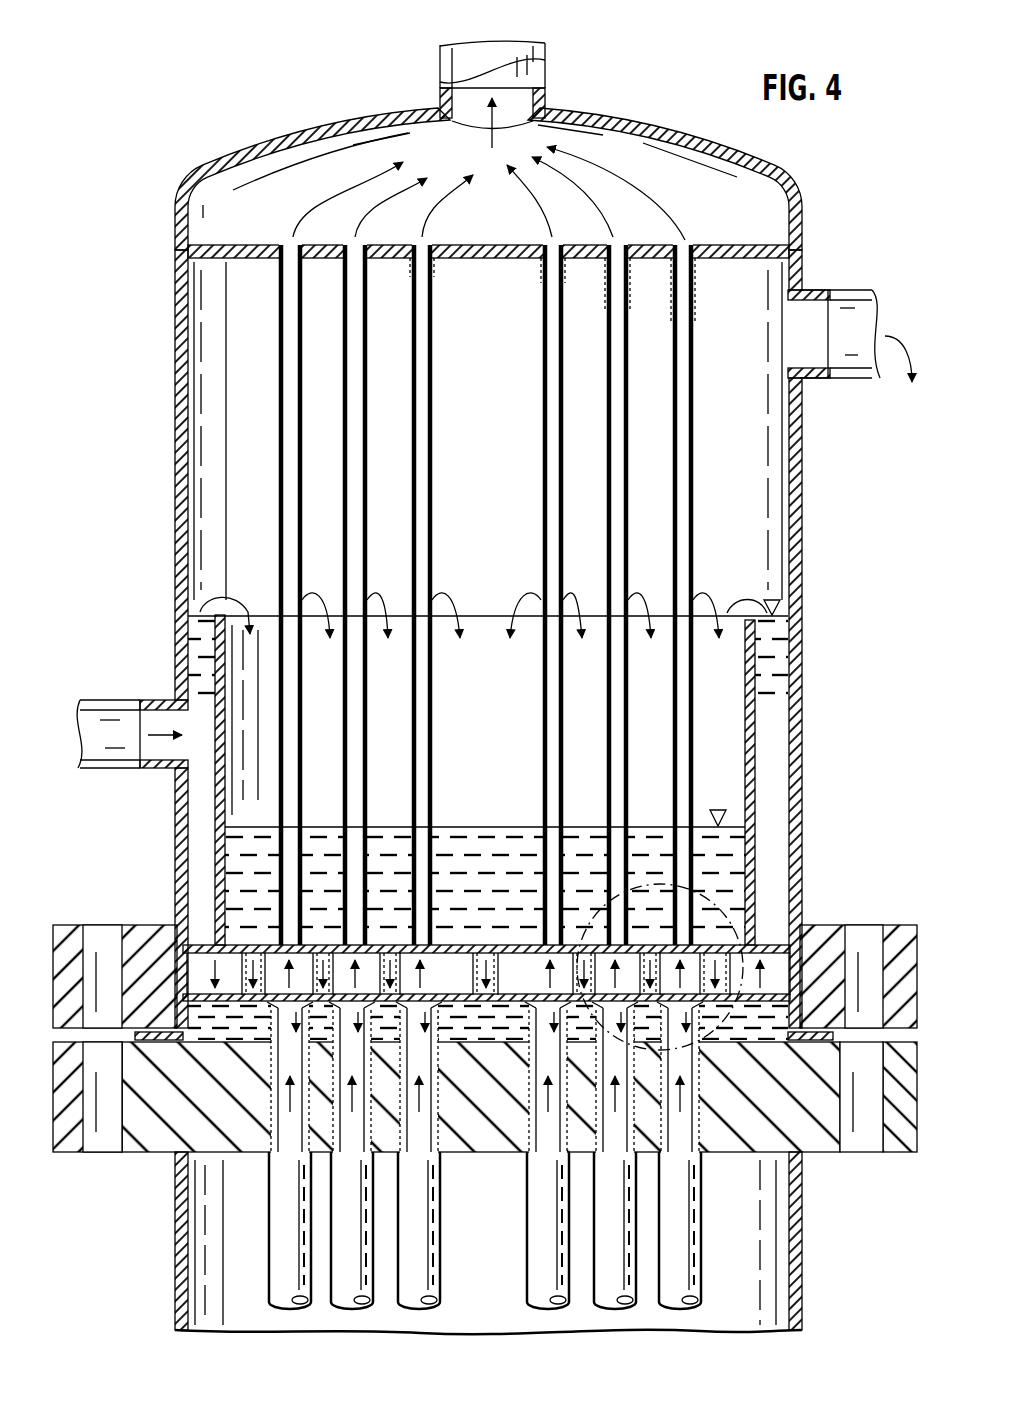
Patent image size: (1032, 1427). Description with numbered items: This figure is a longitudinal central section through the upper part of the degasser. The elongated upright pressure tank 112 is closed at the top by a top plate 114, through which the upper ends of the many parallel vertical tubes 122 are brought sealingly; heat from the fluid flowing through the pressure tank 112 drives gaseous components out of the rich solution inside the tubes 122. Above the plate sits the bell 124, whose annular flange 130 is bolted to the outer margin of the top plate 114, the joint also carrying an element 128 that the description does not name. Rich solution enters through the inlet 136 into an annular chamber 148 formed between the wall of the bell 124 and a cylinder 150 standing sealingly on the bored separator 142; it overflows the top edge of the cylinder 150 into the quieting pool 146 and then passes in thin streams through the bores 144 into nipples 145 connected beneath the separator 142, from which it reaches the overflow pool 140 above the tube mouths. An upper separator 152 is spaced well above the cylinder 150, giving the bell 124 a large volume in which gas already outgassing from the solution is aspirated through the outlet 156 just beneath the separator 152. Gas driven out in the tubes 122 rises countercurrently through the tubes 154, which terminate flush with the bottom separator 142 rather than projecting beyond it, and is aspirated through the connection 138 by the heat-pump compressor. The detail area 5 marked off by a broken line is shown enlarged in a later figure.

The detail area of FIG. 5 is at (796, 910).
The pressure tank 112 is at (803, 1262).
The top plate 114 is at (822, 1153).
The tubes 122 is at (275, 1195).
The bell 124 is at (176, 418).
The gasket 128 is at (160, 1040).
The annular flange 130 is at (815, 920).
The inlet 136 is at (140, 700).
The connection 138 is at (440, 70).
The overflow pool 140 is at (840, 928).
The separator 142 is at (192, 947).
The bores 144 is at (322, 945).
The nipples 145 is at (225, 975).
The quieting pool 146 is at (458, 828).
The annular chamber 148 is at (772, 702).
The cylinder 150 is at (752, 753).
The separator 152 is at (232, 245).
The tubes 154 is at (290, 424).
The outlet 156 is at (842, 378).